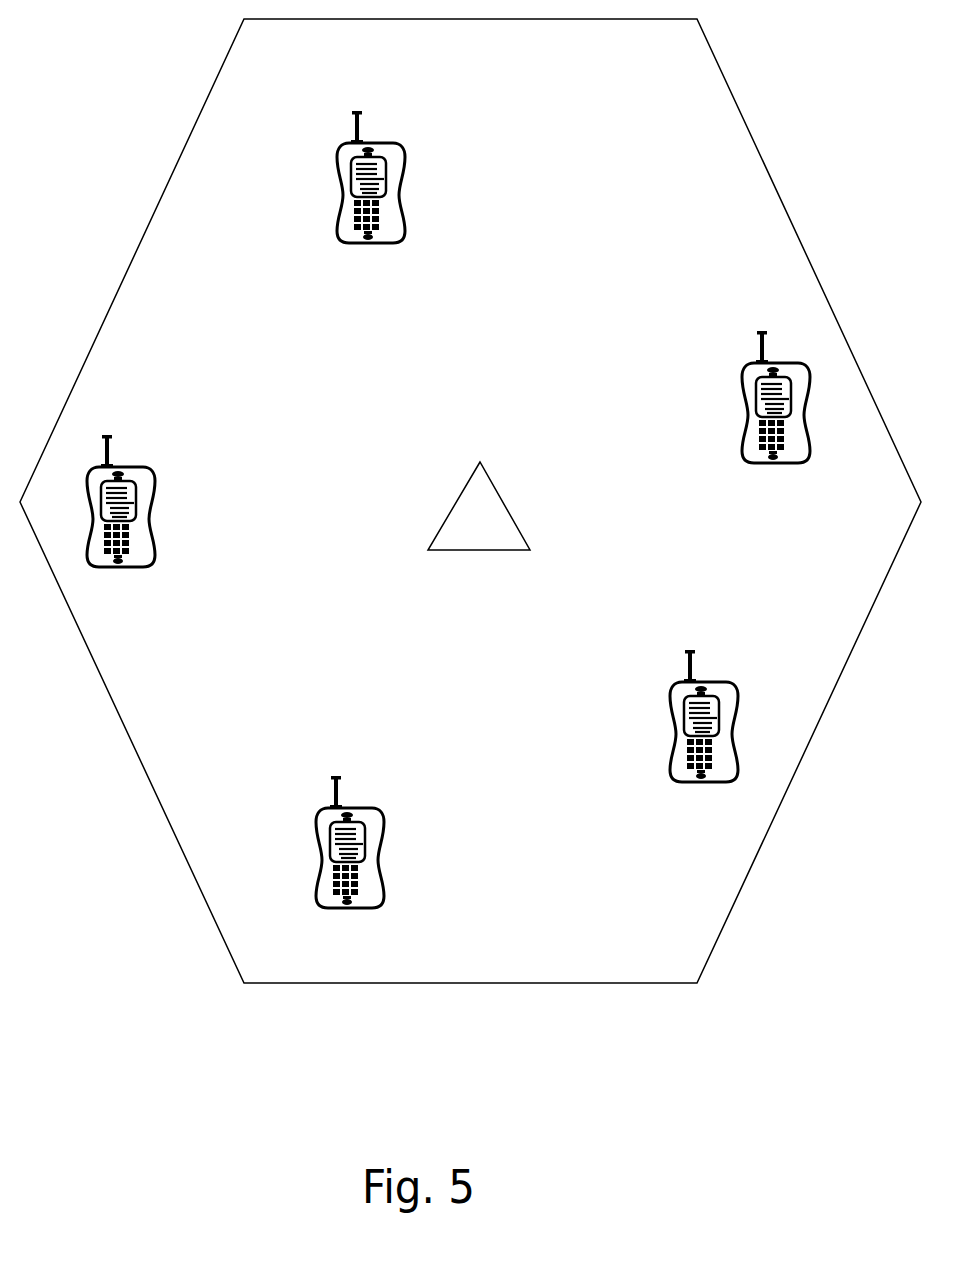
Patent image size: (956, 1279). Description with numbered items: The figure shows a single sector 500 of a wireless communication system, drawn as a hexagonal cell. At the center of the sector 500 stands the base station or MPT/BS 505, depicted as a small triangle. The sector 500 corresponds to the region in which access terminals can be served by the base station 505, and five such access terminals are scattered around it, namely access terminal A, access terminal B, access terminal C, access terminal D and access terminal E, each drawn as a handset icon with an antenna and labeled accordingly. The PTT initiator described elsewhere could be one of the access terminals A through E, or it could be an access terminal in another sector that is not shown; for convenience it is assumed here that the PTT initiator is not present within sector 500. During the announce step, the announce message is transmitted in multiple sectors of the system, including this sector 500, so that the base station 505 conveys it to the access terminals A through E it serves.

The sector 500 is at (276, 989).
The base station or MPT/BS 505 is at (480, 556).
The AT A is at (123, 519).
The AT B is at (371, 197).
The AT C is at (777, 415).
The AT D is at (705, 733).
The AT E is at (350, 861).